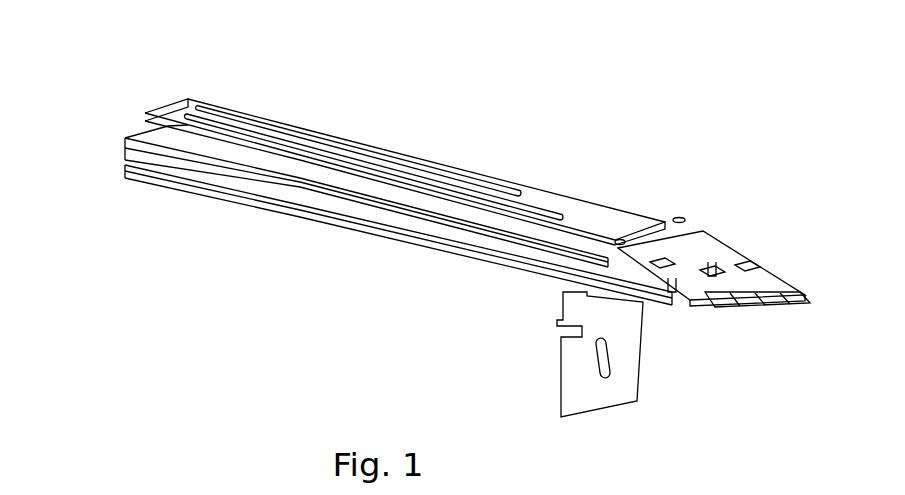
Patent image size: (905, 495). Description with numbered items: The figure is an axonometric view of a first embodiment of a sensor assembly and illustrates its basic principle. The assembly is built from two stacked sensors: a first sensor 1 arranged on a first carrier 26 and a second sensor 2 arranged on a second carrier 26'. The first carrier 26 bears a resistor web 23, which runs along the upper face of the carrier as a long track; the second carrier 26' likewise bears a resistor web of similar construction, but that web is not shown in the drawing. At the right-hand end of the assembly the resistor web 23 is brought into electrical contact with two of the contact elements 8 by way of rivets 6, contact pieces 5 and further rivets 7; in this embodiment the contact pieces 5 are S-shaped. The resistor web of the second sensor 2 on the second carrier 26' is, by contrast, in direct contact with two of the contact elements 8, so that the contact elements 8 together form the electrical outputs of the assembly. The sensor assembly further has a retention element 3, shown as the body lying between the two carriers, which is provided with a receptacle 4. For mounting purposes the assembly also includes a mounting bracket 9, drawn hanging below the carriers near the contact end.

The first sensor 1 is at (553, 175).
The second sensor 2 is at (169, 202).
The retention element 3 is at (125, 152).
The receptacle 4 is at (152, 129).
The contact pieces 5 is at (712, 255).
The rivets 6 is at (620, 240).
The rivets 7 is at (713, 275).
The contact elements 8 is at (735, 310).
The mounting bracket 9 is at (560, 372).
The resistor web 23 is at (422, 162).
The first carrier 26 is at (396, 134).
The second carrier 26' is at (398, 255).